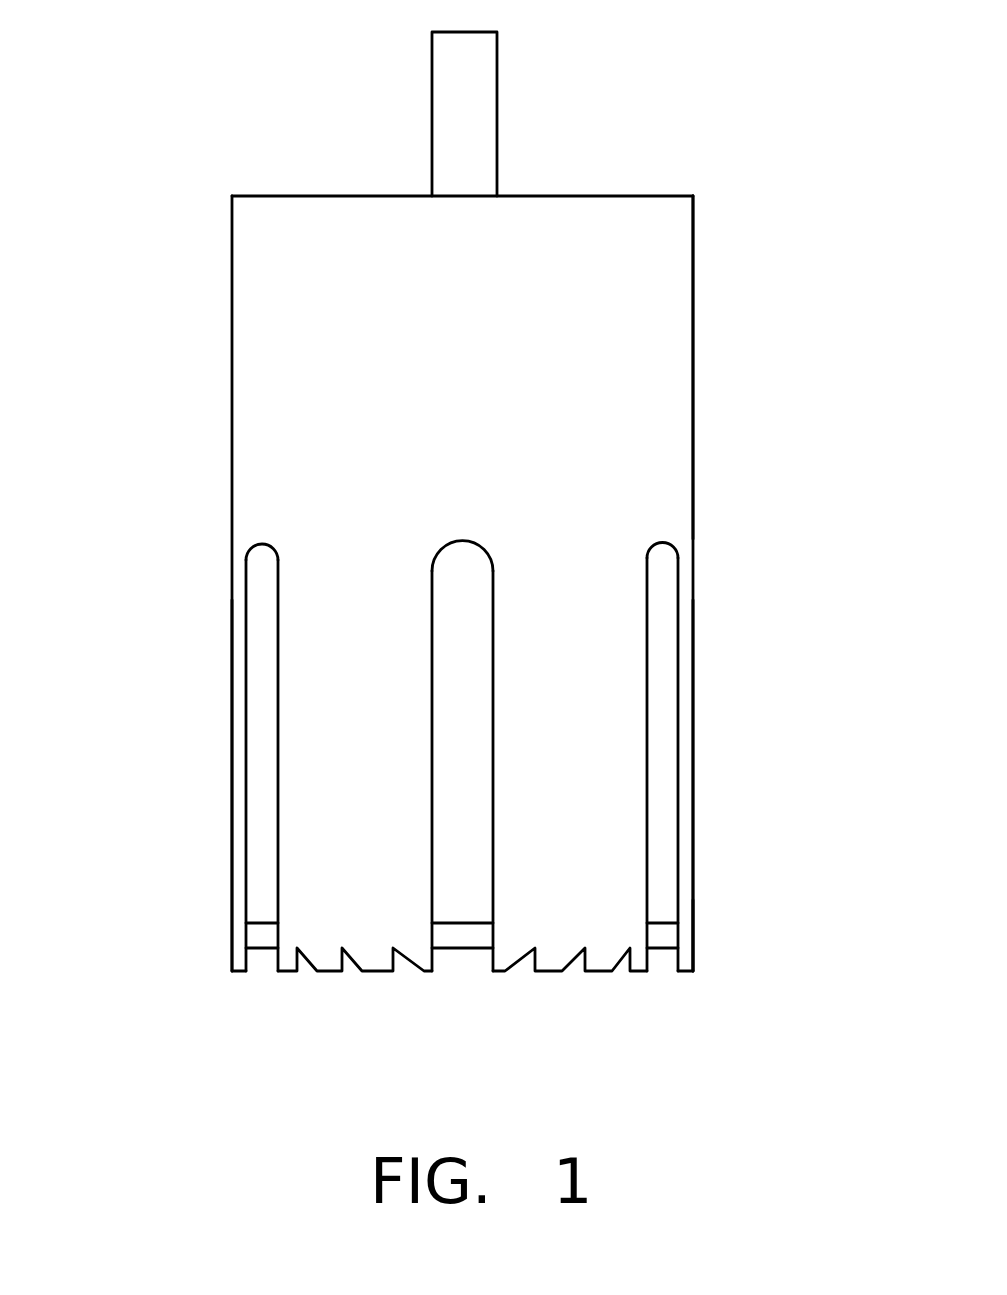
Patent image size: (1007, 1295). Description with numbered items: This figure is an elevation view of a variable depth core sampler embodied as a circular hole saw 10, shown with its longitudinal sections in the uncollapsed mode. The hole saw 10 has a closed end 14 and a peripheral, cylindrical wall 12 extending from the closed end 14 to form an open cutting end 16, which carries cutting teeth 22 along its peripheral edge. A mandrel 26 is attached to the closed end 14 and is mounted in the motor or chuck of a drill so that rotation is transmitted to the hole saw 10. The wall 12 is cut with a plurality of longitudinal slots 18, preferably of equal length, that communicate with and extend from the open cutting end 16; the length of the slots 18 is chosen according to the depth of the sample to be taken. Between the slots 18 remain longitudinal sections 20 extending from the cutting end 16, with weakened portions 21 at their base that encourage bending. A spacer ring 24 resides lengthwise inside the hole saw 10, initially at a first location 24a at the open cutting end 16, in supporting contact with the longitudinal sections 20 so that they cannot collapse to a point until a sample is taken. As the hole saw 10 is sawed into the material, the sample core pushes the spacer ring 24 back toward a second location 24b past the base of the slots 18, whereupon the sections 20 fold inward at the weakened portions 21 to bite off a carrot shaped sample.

The circular hole saw 10 is at (732, 119).
The peripheral cylindrical wall 12 is at (250, 393).
The closed end 14 is at (257, 195).
The open cutting end 16 is at (497, 972).
The longitudinal slots 18 is at (665, 597).
The longitudinal sections 20 is at (360, 794).
The weakened portions 21 is at (375, 547).
The cutting teeth 22 is at (355, 963).
The spacer ring 24 is at (463, 950).
The first location 24a is at (695, 932).
The second location 24b is at (695, 492).
The mandrel 26 is at (497, 100).